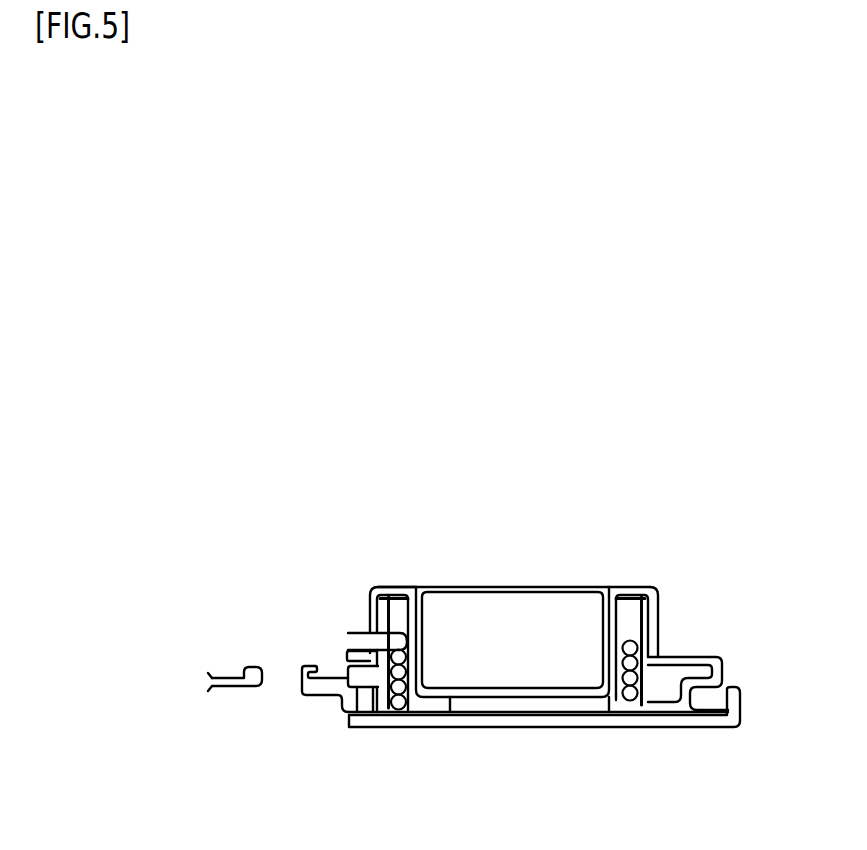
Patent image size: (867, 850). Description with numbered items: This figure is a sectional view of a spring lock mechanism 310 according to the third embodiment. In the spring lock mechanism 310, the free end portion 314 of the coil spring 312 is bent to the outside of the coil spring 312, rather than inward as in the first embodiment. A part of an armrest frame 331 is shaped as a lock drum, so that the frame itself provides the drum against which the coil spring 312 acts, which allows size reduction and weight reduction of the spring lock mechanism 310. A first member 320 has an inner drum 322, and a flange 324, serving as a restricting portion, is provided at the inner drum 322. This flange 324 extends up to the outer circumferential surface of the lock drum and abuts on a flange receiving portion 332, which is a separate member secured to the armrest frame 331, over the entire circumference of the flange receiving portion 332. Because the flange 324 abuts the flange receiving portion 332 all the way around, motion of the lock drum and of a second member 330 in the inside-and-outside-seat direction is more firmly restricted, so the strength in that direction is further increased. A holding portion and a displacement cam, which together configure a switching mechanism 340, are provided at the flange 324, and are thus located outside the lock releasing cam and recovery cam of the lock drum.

The spring lock mechanism 310 is at (590, 496).
The coil spring 312 is at (397, 708).
The free end portion 314 is at (366, 639).
The first member 320 is at (634, 575).
The inner drum 322 is at (657, 619).
The flange 324 is at (379, 587).
The second member 330 is at (228, 716).
The armrest frame 331 is at (327, 692).
The flange receiving portion 332 is at (687, 668).
The switching mechanism 340 is at (364, 614).